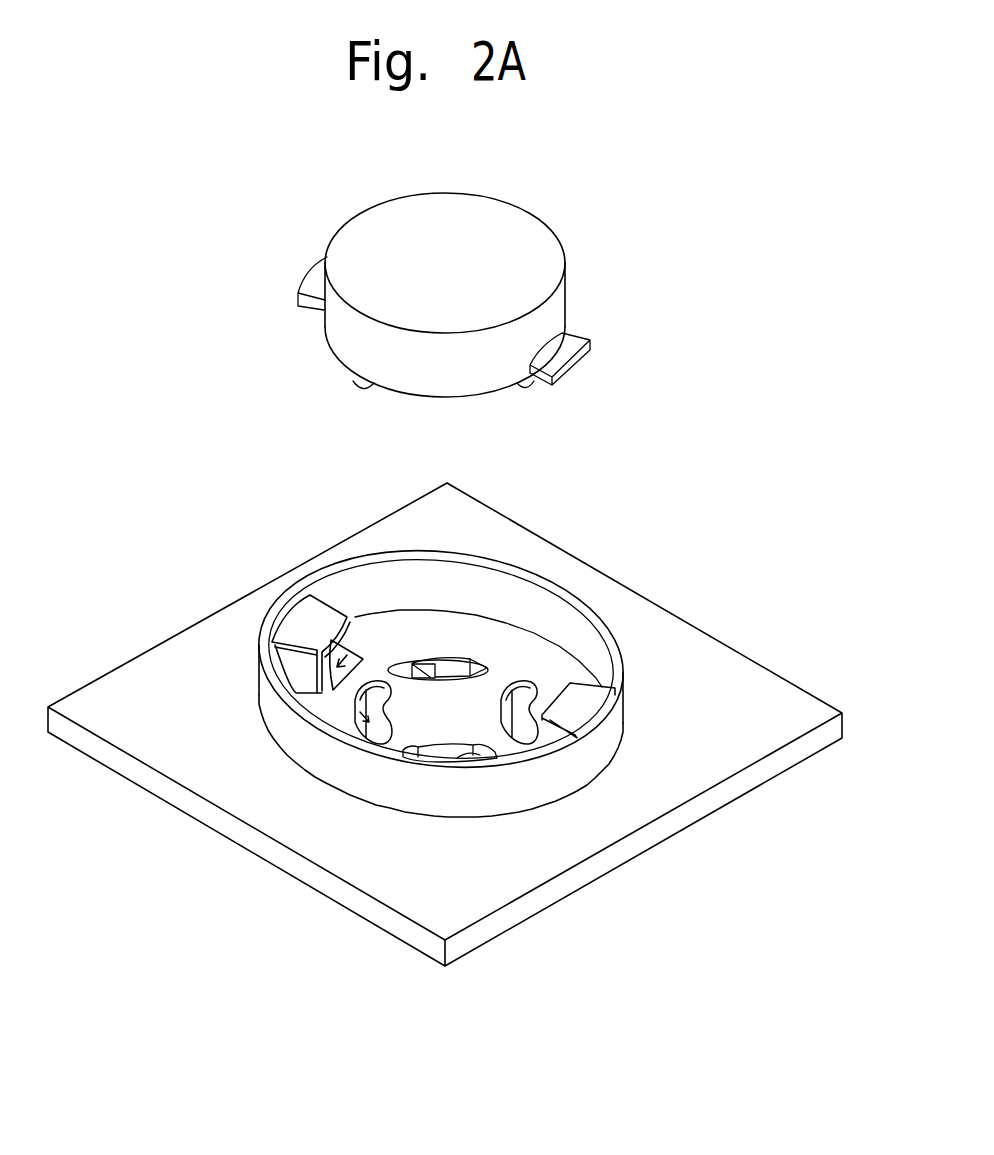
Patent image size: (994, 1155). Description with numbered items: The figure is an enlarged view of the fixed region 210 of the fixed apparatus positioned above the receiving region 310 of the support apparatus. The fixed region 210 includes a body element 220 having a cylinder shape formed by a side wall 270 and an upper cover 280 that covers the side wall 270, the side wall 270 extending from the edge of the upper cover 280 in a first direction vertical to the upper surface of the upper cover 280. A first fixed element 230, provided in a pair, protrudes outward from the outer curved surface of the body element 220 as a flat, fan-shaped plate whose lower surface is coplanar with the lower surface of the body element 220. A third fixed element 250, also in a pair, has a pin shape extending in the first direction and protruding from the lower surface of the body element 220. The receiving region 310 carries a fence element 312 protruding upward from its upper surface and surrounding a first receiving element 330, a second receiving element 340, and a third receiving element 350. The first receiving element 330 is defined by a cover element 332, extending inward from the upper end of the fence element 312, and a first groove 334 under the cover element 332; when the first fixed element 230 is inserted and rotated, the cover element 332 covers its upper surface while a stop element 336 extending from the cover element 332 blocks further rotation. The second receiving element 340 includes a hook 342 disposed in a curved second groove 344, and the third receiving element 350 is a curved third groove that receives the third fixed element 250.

The fixed region 210 is at (444, 297).
The body element 220 is at (565, 300).
The first fixed element 230 is at (298, 298).
The third fixed element 250 is at (353, 379).
The side wall 270 is at (427, 386).
The upper cover 280 is at (380, 213).
The receiving region 310 is at (840, 685).
The fence element 312 is at (618, 722).
The first receiving element 330 is at (307, 569).
The cover element 332 is at (310, 620).
The first groove 334 is at (350, 660).
The stop element 336 is at (290, 659).
The second receiving element 340 is at (509, 556).
The hook 342 is at (425, 667).
The second groove 344 is at (472, 660).
The third receiving element 350 is at (352, 703).